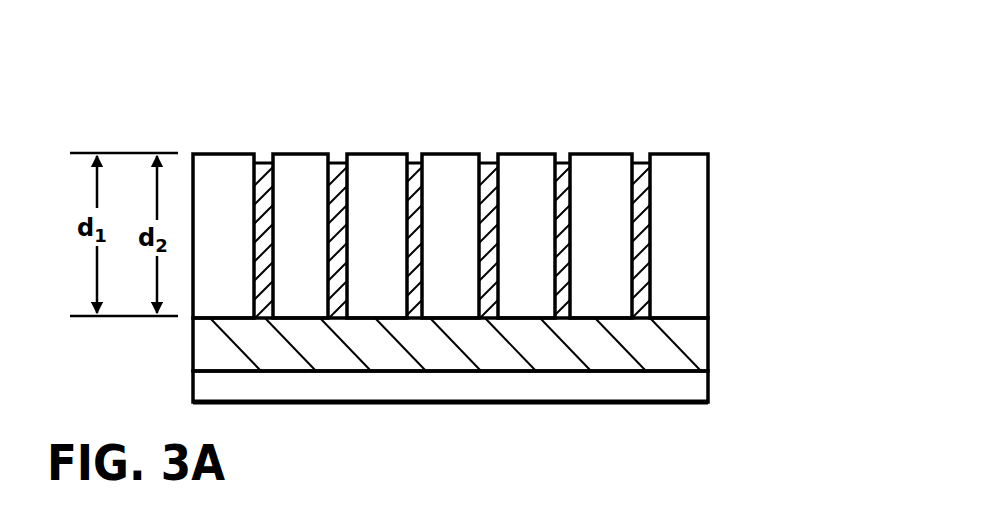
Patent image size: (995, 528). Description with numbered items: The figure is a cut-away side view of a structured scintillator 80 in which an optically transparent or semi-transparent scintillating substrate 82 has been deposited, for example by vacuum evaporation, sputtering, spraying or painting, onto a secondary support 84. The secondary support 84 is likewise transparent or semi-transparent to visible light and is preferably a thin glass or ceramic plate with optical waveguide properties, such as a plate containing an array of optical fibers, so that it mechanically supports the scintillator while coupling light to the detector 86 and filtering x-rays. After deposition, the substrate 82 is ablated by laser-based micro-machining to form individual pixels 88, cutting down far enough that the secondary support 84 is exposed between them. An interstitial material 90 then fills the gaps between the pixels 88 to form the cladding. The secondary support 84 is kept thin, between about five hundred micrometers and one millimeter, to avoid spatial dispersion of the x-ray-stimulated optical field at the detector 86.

The structured scintillator 80 is at (477, 207).
The substrate 82 is at (477, 208).
The secondary support 84 is at (696, 351).
The detector 86 is at (685, 389).
The pixels 88 is at (443, 155).
The interstitial material 90 is at (488, 161).